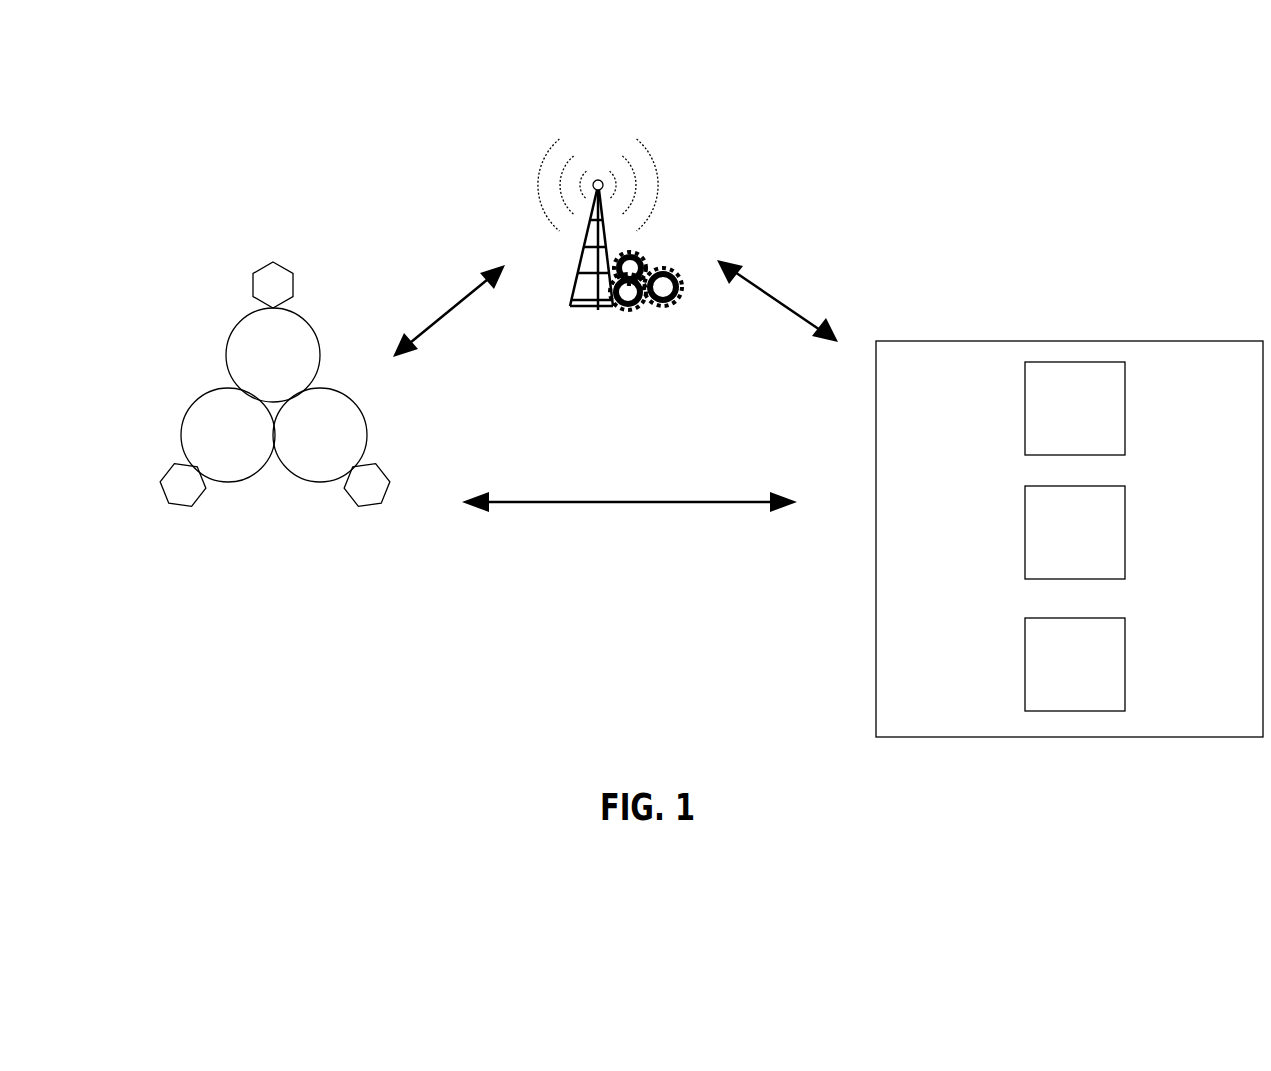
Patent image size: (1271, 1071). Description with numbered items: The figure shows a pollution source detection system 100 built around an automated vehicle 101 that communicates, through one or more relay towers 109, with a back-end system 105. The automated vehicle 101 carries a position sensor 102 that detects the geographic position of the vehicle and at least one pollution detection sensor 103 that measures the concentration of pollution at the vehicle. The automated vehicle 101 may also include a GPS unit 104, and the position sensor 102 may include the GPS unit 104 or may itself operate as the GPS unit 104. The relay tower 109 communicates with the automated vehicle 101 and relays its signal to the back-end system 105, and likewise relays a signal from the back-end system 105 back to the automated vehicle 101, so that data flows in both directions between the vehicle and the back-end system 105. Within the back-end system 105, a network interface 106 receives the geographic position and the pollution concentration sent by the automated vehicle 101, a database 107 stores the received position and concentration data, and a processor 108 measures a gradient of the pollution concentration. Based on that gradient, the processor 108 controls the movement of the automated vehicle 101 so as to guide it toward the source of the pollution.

The pollution source detection system 100 is at (176, 122).
The automated vehicle 101 is at (294, 484).
The position sensor 102 is at (180, 507).
The pollution detection sensor 103 is at (271, 262).
The GPS unit 104 is at (372, 508).
The back-end system 105 is at (1169, 341).
The network interface 106 is at (1096, 425).
The database 107 is at (1096, 546).
The processor 108 is at (1096, 680).
The relay tower 109 is at (662, 176).